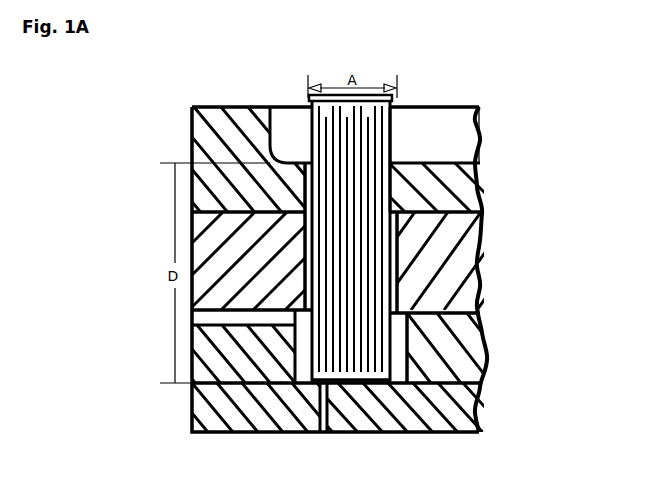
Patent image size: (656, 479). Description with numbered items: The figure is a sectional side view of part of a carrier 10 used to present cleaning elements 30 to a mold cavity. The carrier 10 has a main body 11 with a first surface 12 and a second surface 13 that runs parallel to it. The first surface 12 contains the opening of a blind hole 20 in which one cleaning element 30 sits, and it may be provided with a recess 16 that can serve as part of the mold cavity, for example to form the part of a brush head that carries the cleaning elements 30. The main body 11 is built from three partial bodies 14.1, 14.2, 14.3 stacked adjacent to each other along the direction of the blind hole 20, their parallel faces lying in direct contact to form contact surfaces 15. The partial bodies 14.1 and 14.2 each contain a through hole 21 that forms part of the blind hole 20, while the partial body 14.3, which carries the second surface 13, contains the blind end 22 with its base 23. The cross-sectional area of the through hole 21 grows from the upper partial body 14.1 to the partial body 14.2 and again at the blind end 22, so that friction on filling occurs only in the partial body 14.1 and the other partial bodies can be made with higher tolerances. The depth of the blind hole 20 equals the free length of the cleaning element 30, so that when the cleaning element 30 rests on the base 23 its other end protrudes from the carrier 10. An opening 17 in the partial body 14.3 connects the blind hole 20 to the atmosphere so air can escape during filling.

The carrier 10 is at (422, 62).
The main body 11 is at (141, 110).
The first surface 12 is at (248, 105).
The second surface 13 is at (243, 435).
The partial body 14.1 is at (451, 196).
The partial body 14.2 is at (443, 234).
The partial body 14.3 is at (455, 346).
The contact surfaces 15 is at (494, 308).
The recess 16 is at (434, 149).
The opening 17 is at (327, 436).
The blind hole 20 is at (298, 250).
The through hole 21 is at (398, 295).
The blind end 22 is at (392, 362).
The base 23 is at (402, 386).
The cleaning element 30 is at (380, 167).